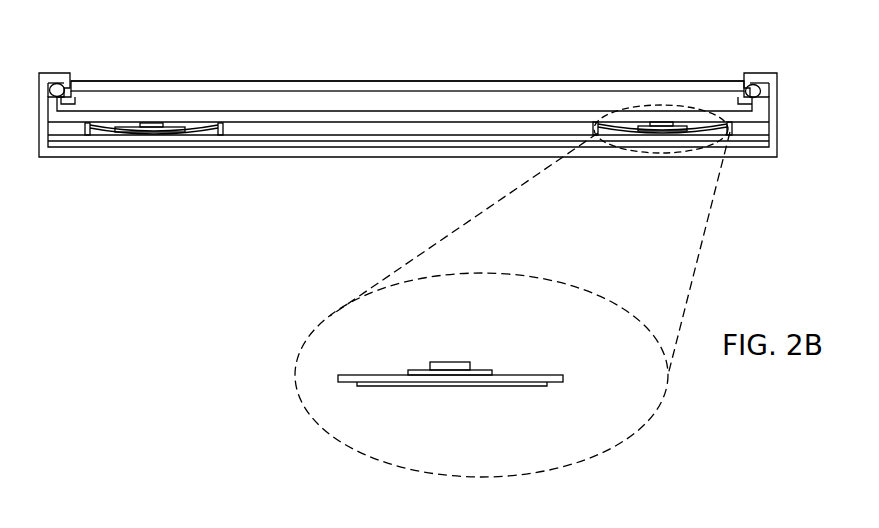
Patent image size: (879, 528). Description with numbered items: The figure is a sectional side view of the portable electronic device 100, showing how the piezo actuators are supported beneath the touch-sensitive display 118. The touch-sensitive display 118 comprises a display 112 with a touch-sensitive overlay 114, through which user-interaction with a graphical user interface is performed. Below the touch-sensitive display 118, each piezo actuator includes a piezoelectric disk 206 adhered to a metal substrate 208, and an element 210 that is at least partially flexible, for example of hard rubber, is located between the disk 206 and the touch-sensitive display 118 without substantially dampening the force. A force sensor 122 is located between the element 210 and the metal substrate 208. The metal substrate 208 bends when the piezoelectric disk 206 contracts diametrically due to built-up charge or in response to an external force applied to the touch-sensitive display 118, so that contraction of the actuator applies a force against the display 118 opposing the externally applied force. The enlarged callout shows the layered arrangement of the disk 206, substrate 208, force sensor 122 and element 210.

The portable electronic device 100 is at (611, 49).
The display 112 is at (318, 91).
The touch-sensitive overlay 114 is at (387, 81).
The touch-sensitive display 118 is at (149, 81).
The force sensor 122 is at (482, 370).
The piezoelectric disk 206 is at (513, 385).
The metal substrate 208 is at (550, 375).
The element 210 is at (440, 361).